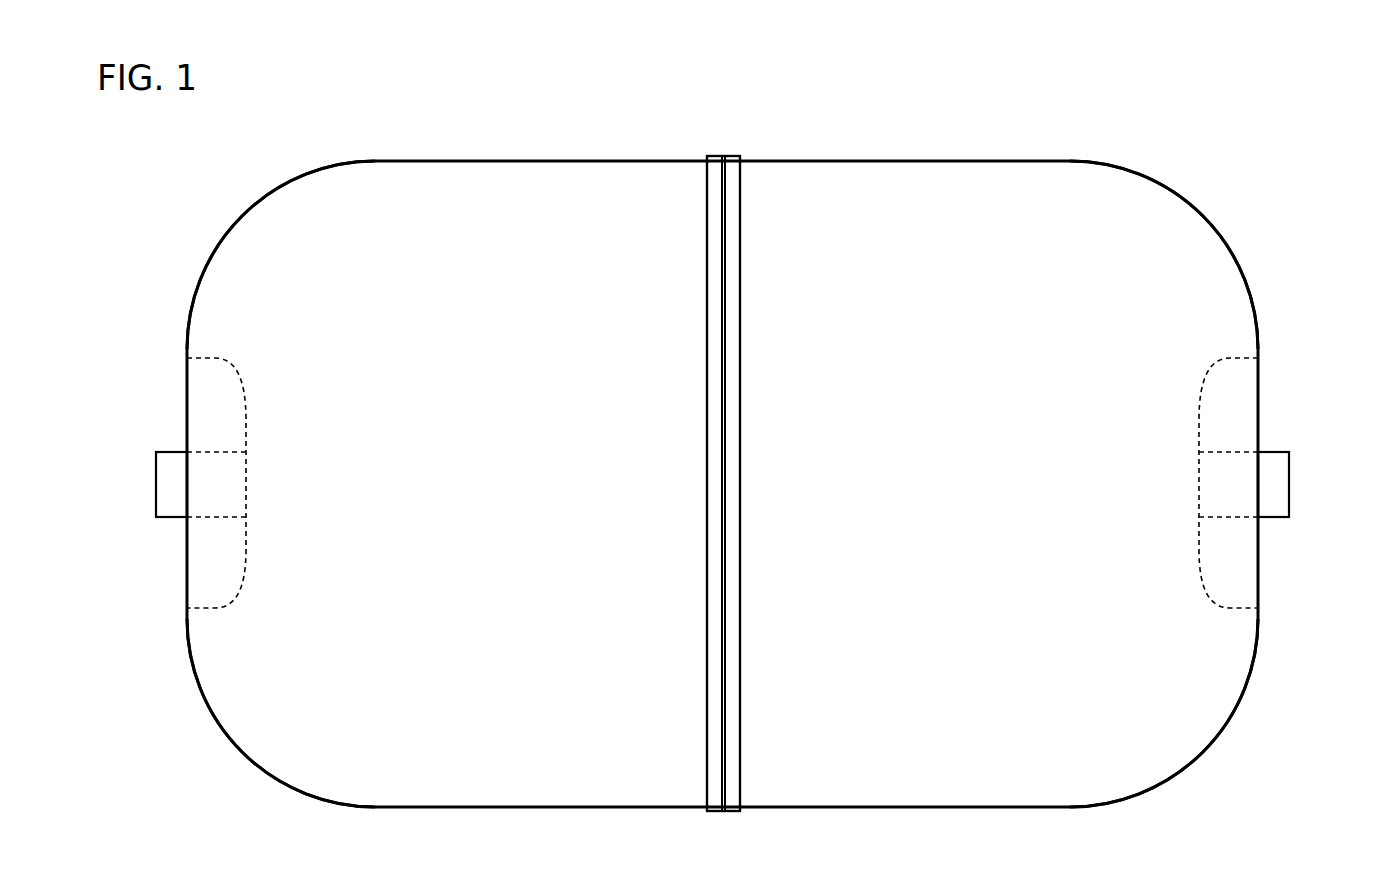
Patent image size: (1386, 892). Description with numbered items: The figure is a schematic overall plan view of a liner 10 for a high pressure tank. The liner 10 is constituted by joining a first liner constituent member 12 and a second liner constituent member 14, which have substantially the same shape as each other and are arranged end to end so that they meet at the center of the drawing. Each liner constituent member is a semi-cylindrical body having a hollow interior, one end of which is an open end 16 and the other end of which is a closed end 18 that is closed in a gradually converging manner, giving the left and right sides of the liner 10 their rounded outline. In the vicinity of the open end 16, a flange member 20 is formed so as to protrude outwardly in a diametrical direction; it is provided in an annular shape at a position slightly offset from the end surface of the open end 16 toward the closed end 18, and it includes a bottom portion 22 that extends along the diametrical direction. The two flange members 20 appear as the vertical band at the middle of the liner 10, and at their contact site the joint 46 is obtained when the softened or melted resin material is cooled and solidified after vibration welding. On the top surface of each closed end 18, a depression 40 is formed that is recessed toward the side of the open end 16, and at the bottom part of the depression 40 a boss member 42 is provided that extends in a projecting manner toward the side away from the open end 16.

The liner for a high pressure tank 10 is at (382, 108).
The first liner constituent member 12 is at (289, 180).
The second liner constituent member 14 is at (1155, 180).
The open end 16 is at (722, 582).
The closed end 18 is at (247, 755).
The flange member 20 is at (773, 397).
The bottom portion 22 is at (723, 483).
The depression 40 is at (205, 608).
The boss member 42 is at (170, 473).
The joint 46 is at (725, 600).